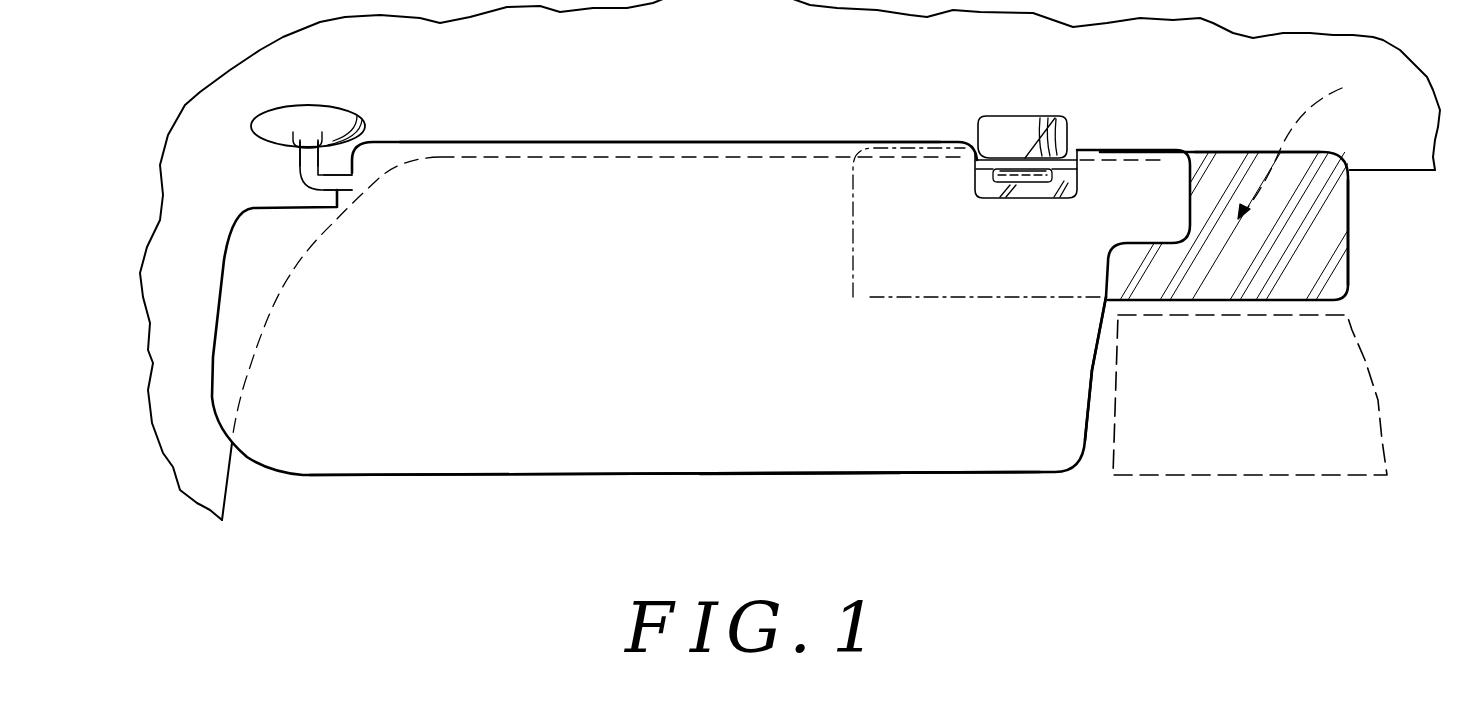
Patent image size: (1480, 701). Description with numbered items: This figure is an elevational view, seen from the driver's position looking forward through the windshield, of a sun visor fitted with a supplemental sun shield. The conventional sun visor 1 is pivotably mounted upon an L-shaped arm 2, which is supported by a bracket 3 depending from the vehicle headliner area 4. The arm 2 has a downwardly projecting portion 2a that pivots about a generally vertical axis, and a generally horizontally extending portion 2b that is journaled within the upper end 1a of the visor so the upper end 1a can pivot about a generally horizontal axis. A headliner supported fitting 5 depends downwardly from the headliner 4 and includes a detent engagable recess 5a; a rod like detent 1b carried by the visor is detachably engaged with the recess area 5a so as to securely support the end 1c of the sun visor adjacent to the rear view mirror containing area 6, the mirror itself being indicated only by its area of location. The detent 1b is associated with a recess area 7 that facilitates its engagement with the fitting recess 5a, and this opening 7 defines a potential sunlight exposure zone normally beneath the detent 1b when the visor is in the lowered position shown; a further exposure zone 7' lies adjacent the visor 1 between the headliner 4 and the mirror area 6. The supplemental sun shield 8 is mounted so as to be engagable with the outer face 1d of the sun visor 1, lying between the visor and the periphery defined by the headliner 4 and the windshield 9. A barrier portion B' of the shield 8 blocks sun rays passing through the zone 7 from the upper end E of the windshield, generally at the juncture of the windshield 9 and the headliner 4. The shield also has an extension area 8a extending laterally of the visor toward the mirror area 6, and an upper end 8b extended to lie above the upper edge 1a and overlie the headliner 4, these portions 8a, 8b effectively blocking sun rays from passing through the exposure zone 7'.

The sun visor 1 is at (953, 460).
The upper end of the sun visor 1a is at (608, 150).
The rod like detent 1b is at (975, 180).
The end of the sun visor 1c is at (1088, 368).
The outer face of the sun visor 1d is at (636, 337).
The L-shaped arm 2 is at (338, 178).
The downwardly projecting portion 2a is at (300, 158).
The generally horizontally extending portion 2b is at (336, 200).
The bracket 3 is at (310, 108).
The vehicle headliner area 4 is at (725, 69).
The headliner supported fitting 5 is at (1010, 123).
The detent engagable recess 5a is at (1033, 153).
The rear view mirror containing area 6 is at (1248, 407).
The recess area 7 is at (988, 206).
The exposure zone 7' is at (1300, 147).
The supplemental sun shield 8 is at (1344, 288).
The extension area 8a is at (1348, 255).
The upper end of the supplemental sun shield 8b is at (1180, 152).
The windshield 9 is at (800, 522).
The barrier portion B' is at (1023, 208).
The upper end of the windshield E is at (1400, 167).